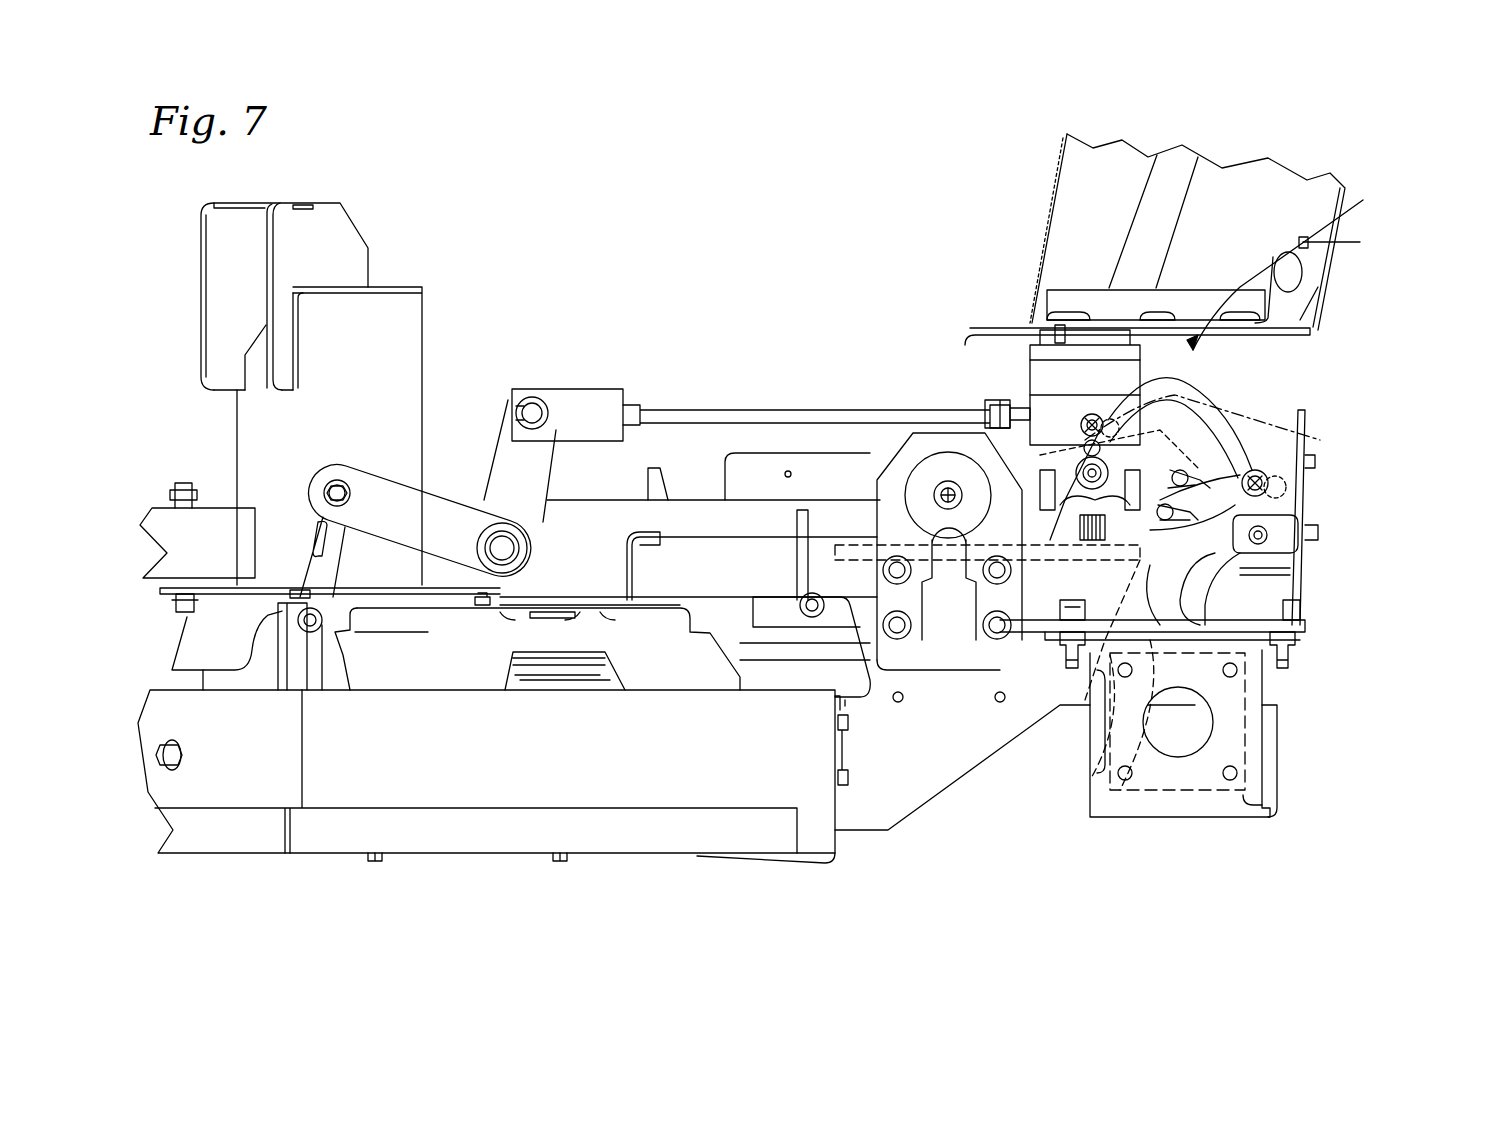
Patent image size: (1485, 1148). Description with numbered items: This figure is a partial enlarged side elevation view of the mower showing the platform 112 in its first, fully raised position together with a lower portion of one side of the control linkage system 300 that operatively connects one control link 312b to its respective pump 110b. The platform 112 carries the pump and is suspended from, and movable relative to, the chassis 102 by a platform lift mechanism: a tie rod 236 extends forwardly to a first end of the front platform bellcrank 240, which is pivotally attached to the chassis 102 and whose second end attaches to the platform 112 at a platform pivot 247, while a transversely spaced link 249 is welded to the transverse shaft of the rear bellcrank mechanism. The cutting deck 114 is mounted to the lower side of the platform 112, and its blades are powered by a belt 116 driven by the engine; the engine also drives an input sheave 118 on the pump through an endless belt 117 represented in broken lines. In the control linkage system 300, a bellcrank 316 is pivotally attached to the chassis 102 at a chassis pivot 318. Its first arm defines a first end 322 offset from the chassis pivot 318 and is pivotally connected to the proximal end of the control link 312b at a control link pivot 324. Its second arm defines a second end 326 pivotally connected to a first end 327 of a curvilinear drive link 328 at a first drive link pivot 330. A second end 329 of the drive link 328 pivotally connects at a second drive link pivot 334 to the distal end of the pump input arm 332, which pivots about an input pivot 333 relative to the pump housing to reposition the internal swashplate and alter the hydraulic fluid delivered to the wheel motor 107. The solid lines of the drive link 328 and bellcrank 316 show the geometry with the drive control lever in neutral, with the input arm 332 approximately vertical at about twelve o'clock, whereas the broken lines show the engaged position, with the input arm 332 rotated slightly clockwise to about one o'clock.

The chassis 102 is at (583, 488).
The wheel motor 107 is at (1195, 790).
The pump 110b is at (1005, 400).
The platform 112 is at (888, 840).
The cutting deck 114 is at (590, 853).
The belt 116 is at (782, 690).
The endless belt 117 is at (835, 545).
The input sheave 118 is at (1015, 740).
The tie rod 236 is at (735, 410).
The front platform bellcrank 240 is at (462, 410).
The platform pivot 247 is at (930, 395).
The link 249 is at (945, 450).
The control linkage system 300 is at (1299, 275).
The control link 312b is at (1343, 208).
The bellcrank 316 is at (1300, 630).
The chassis pivot 318 is at (1235, 560).
The first end 322 is at (1290, 668).
The control link pivot 324 is at (1275, 445).
The second end 326 is at (1300, 530).
The first end 327 is at (1270, 470).
The drive link 328 is at (1230, 412).
The second end 329 is at (1045, 345).
The first drive link pivot 330 is at (1215, 505).
The pump input arm 332 is at (1075, 420).
The input pivot 333 is at (1095, 770).
The second drive link pivot 334 is at (1110, 730).